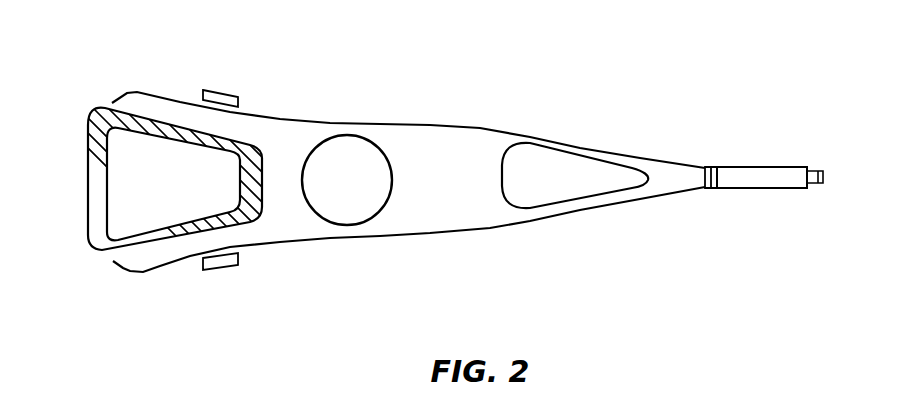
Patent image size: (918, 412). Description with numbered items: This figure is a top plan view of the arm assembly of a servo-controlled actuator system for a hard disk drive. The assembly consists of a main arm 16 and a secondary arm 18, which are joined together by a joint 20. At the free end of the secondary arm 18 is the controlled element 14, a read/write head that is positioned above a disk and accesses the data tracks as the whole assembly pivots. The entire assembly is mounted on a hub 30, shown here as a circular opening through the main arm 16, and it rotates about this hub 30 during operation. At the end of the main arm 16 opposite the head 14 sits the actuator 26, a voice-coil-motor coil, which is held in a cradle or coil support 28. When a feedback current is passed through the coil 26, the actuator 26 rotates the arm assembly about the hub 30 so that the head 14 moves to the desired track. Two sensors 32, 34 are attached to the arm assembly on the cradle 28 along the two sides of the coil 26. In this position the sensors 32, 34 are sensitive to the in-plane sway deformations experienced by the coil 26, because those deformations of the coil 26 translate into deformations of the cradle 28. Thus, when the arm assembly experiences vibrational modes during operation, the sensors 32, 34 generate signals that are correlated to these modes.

The controlled element 14 is at (818, 186).
The main arm 16 is at (430, 147).
The secondary arm 18 is at (738, 177).
The joint 20 is at (716, 190).
The actuator 26 is at (95, 110).
The coil support 28 is at (162, 104).
The hub 30 is at (347, 200).
The sensor 32 is at (223, 264).
The sensor 34 is at (213, 90).